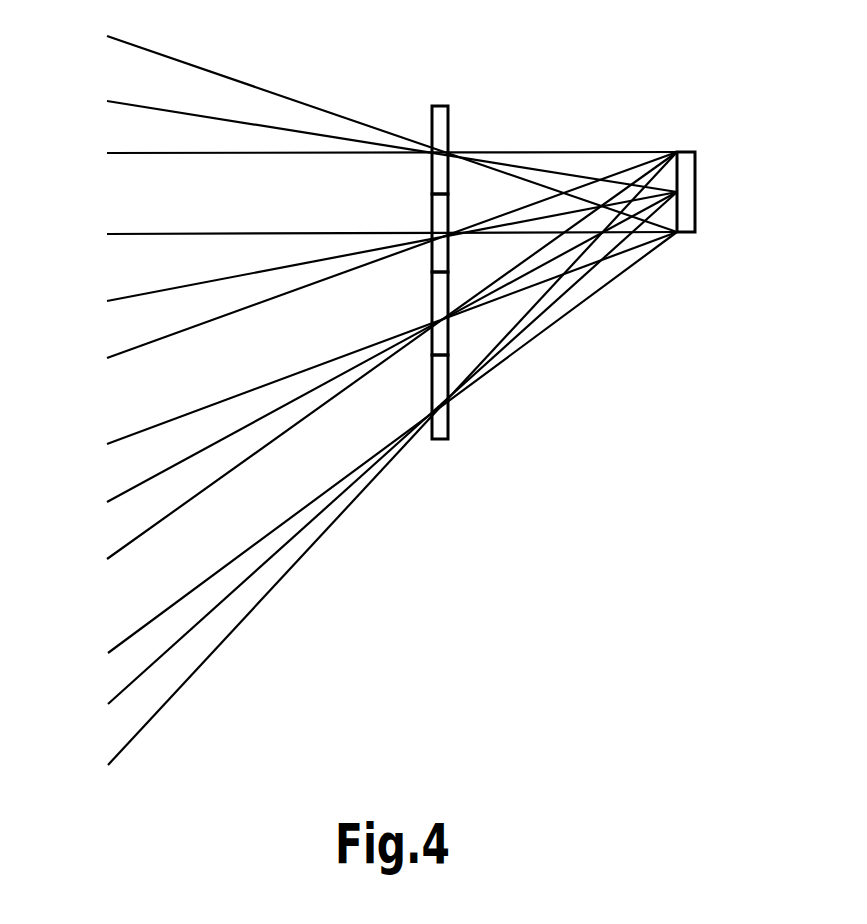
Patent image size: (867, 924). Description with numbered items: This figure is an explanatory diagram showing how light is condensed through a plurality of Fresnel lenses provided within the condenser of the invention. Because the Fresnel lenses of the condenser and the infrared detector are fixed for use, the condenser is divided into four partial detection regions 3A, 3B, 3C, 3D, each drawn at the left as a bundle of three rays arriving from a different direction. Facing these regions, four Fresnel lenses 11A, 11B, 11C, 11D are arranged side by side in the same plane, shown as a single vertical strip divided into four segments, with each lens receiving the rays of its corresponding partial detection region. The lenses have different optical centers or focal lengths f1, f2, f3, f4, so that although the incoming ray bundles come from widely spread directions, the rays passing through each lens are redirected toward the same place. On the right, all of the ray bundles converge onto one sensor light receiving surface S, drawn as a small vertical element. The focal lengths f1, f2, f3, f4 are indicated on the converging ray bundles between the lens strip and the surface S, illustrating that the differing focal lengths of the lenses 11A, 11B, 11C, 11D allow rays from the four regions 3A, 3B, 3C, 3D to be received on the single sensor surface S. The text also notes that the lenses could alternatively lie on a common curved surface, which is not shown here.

The partial detection region 3A is at (92, 47).
The partial detection region 3B is at (92, 248).
The partial detection region 3C is at (92, 452).
The partial detection region 3D is at (92, 663).
The Fresnel lens 11A is at (430, 123).
The Fresnel lens 11B is at (430, 214).
The Fresnel lens 11C is at (432, 302).
The Fresnel lens 11D is at (432, 412).
The focal length f1 is at (533, 168).
The focal length f2 is at (562, 213).
The focal length f3 is at (560, 255).
The focal length f4 is at (538, 315).
The sensor light receiving surface S is at (695, 190).